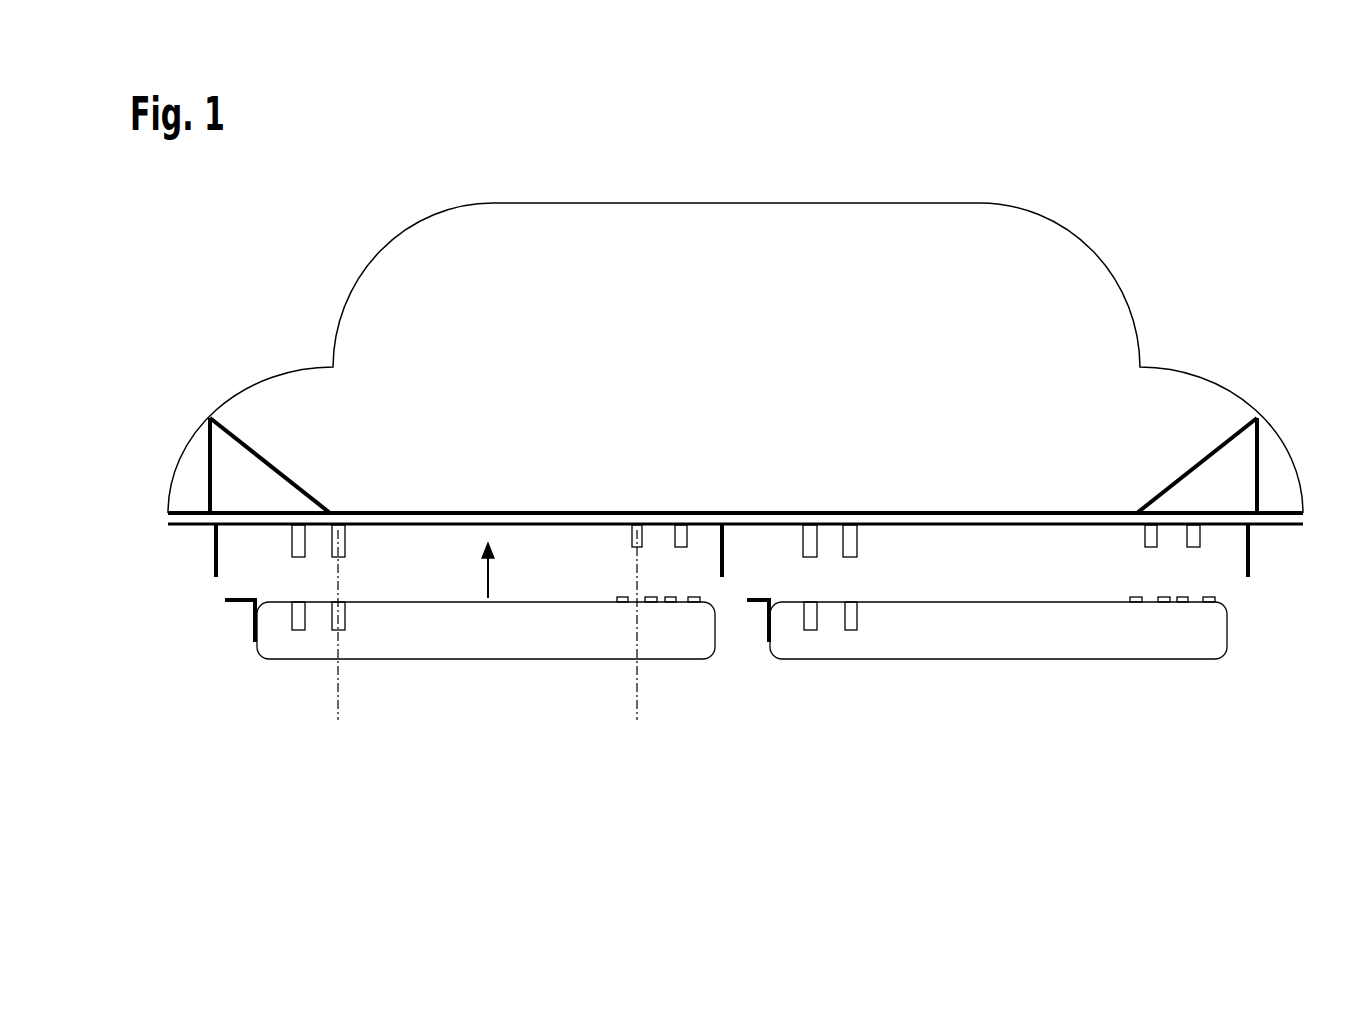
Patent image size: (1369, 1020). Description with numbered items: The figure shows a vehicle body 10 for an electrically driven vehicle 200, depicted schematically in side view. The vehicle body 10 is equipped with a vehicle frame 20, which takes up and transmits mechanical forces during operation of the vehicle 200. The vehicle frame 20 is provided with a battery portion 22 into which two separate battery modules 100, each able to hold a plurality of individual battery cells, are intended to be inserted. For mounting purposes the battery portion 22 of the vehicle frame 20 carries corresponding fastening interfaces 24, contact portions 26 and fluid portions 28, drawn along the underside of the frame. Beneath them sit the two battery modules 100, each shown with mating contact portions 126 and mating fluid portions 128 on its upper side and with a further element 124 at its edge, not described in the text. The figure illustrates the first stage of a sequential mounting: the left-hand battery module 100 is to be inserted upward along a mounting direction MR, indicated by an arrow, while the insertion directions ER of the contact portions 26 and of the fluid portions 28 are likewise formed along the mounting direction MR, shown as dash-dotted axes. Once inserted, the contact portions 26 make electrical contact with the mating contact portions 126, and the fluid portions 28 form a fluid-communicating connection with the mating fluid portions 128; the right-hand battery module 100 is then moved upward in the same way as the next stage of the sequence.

The electrically driven vehicle 200 is at (1185, 180).
The vehicle body 10 is at (508, 478).
The vehicle frame 20 is at (1010, 520).
The battery portion 22 is at (1217, 562).
The fastening interfaces 24 is at (250, 522).
The contact portions 26 is at (305, 548).
The fluid portions 28 is at (683, 546).
The battery module 100 is at (531, 648).
The board bracket 124 is at (240, 603).
The mating contact portions 126 is at (337, 620).
The mating fluid portions 128 is at (677, 598).
The mounting direction MR is at (485, 572).
The insertion directions ER is at (340, 690).